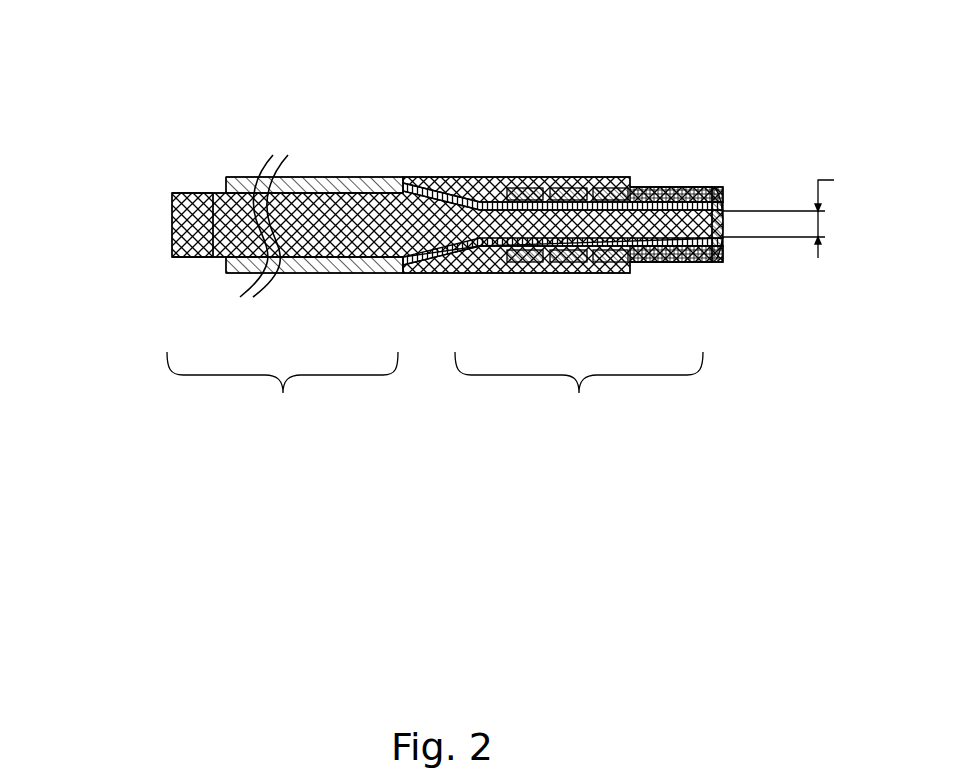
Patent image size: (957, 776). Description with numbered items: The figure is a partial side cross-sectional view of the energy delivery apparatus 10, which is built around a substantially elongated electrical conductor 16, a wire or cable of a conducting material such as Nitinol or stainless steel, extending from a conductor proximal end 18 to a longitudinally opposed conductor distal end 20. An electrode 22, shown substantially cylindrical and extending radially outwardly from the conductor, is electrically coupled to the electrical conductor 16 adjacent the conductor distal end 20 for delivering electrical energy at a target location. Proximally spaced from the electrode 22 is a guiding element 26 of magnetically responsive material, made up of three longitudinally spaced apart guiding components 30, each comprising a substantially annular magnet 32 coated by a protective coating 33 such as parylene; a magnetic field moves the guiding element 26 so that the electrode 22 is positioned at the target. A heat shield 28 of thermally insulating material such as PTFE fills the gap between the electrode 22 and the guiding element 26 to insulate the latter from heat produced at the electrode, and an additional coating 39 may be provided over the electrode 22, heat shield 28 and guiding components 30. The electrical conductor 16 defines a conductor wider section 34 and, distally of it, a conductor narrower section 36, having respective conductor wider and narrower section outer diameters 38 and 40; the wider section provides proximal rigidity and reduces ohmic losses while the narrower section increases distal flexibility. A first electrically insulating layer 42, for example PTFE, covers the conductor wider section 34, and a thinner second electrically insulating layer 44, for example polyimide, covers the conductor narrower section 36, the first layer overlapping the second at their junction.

The energy delivery apparatus 10 is at (364, 62).
The electrical conductor 16 is at (324, 258).
The conductor proximal end 18 is at (172, 223).
The conductor distal end 20 is at (728, 202).
The electrode 22 is at (708, 272).
The guiding element 26 is at (613, 277).
The heat shield 28 is at (641, 264).
The guiding components 30 is at (607, 262).
The annular magnet 32 is at (520, 177).
The protective coating 33 is at (507, 177).
The conductor wider section 34 is at (282, 387).
The conductor narrower section 36 is at (579, 387).
The conductor wider section outer diameter 38 is at (841, 212).
The additional coating 39 is at (463, 177).
The conductor narrower section outer diameter 40 is at (186, 193).
The first electrically insulating layer 42 is at (345, 178).
The second electrically insulating layer 44 is at (455, 268).